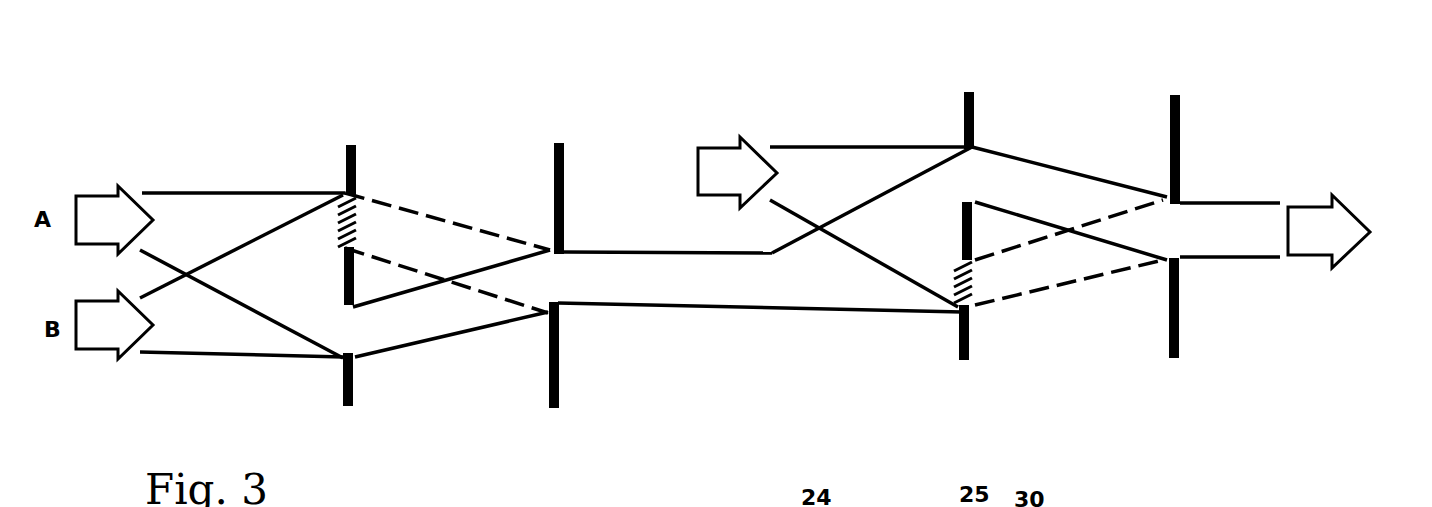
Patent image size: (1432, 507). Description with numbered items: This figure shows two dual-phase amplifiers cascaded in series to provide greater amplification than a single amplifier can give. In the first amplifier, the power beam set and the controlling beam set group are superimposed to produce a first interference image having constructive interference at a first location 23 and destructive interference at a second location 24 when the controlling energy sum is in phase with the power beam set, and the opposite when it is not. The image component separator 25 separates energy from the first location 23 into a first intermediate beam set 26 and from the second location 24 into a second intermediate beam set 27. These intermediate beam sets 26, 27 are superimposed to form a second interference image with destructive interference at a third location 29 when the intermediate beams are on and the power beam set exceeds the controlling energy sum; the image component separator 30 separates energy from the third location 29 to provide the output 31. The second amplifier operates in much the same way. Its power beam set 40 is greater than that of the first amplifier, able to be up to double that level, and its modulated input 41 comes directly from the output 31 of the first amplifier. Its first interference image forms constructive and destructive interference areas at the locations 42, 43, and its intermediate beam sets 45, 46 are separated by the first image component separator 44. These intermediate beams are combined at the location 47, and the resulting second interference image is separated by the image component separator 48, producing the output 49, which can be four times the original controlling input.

The first location 23 is at (338, 328).
The second location 24 is at (337, 237).
The image component separator 25 is at (335, 161).
The first intermediate beam set 26 is at (461, 303).
The second intermediate beam set 27 is at (461, 255).
The third location 29 is at (541, 279).
The image component separator 30 is at (565, 192).
The output 31 is at (611, 274).
The power beam set 40 is at (721, 172).
The modulated input 41 is at (761, 278).
The location 42 is at (961, 179).
The location 43 is at (948, 281).
The first image component separator 44 is at (980, 117).
The transmitted beam path 45 is at (1095, 251).
The transmitted beam path 46 is at (1081, 206).
The location 47 is at (1160, 225).
The image component separator 48 is at (1185, 122).
The output 49 is at (1347, 231).